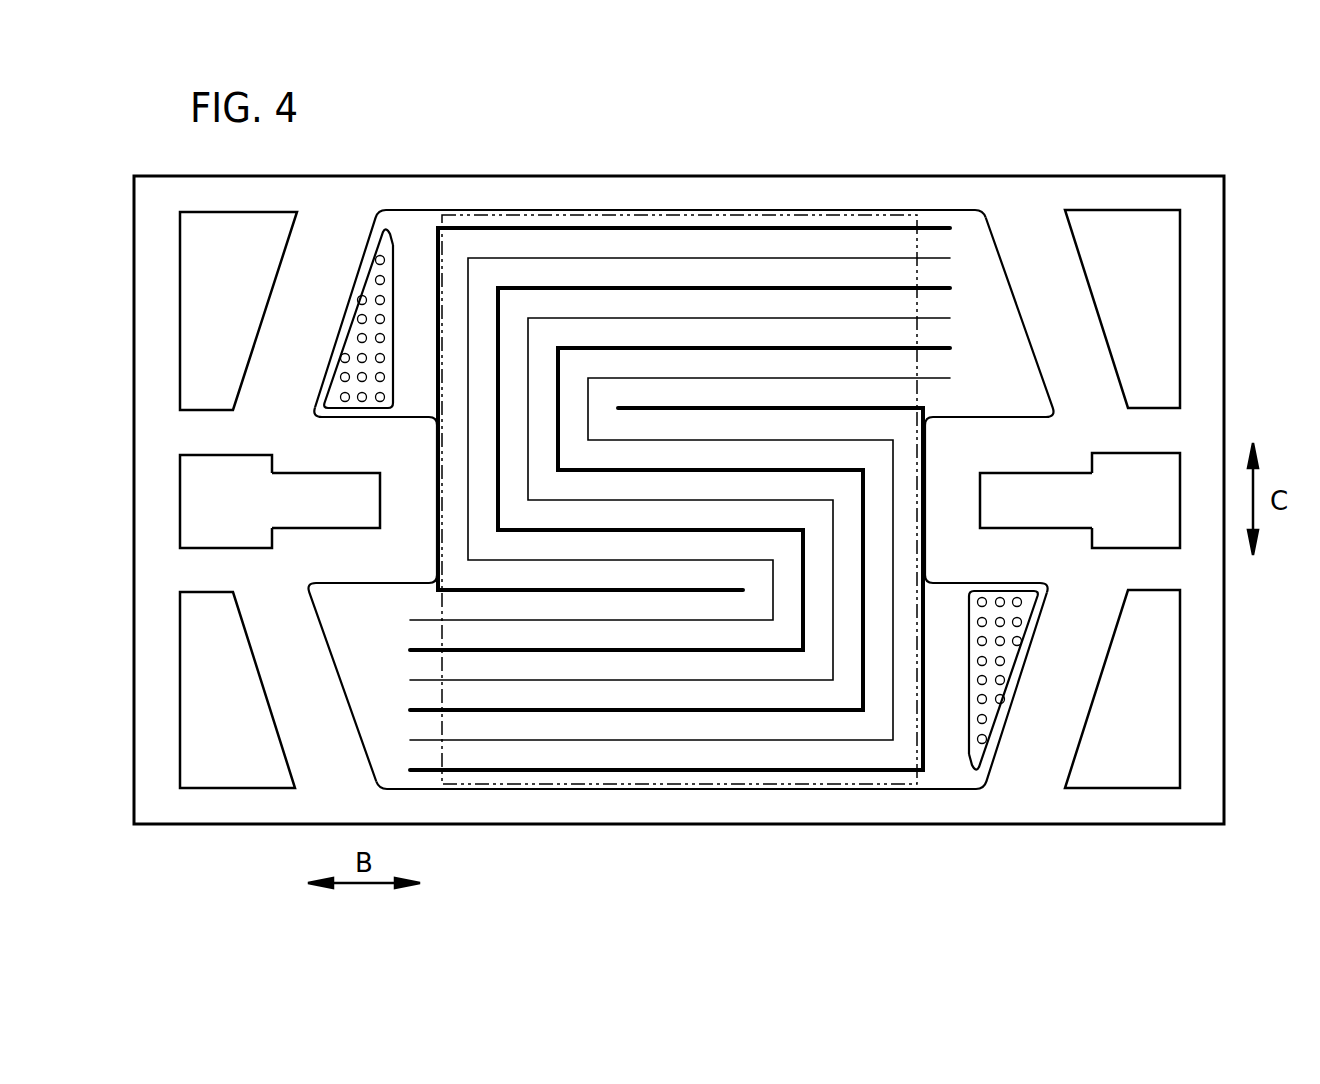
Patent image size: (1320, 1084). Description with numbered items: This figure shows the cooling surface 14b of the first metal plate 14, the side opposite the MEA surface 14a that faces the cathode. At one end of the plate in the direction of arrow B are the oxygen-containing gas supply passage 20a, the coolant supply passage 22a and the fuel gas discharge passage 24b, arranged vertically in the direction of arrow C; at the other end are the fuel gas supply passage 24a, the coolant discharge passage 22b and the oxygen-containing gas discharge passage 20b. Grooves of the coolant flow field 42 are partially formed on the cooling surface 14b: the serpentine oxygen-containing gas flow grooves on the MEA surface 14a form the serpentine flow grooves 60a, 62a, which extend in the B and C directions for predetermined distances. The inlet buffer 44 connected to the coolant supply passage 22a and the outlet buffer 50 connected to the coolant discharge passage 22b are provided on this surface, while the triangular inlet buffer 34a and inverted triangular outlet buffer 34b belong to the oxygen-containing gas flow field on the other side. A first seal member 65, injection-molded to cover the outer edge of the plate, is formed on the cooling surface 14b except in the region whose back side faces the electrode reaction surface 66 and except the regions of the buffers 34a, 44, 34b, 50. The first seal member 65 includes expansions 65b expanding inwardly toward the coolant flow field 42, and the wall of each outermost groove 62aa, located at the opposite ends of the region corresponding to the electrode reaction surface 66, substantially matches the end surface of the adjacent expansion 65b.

The first metal plate 14 is at (873, 135).
The MEA surface 14a is at (862, 812).
The cooling surface 14b is at (607, 812).
The oxygen-containing gas supply passage 20a is at (1122, 309).
The oxygen-containing gas discharge passage 20b is at (237, 690).
The coolant supply passage 22a is at (1136, 500).
The coolant discharge passage 22b is at (226, 501).
The fuel gas supply passage 24a is at (238, 311).
The fuel gas discharge passage 24b is at (1122, 689).
The inlet buffer 34a is at (1052, 382).
The outlet buffer 34b is at (313, 619).
The coolant flow field 42 is at (680, 454).
The inlet buffer 44 is at (975, 757).
The outlet buffer 50 is at (383, 237).
The serpentine flow grooves 60a is at (680, 454).
The serpentine flow grooves 62a is at (500, 492).
The outermost grooves 62aa is at (440, 552).
The first seal member 65 is at (680, 461).
The expansions 65b is at (410, 505).
The electrode reaction surface 66 is at (508, 790).